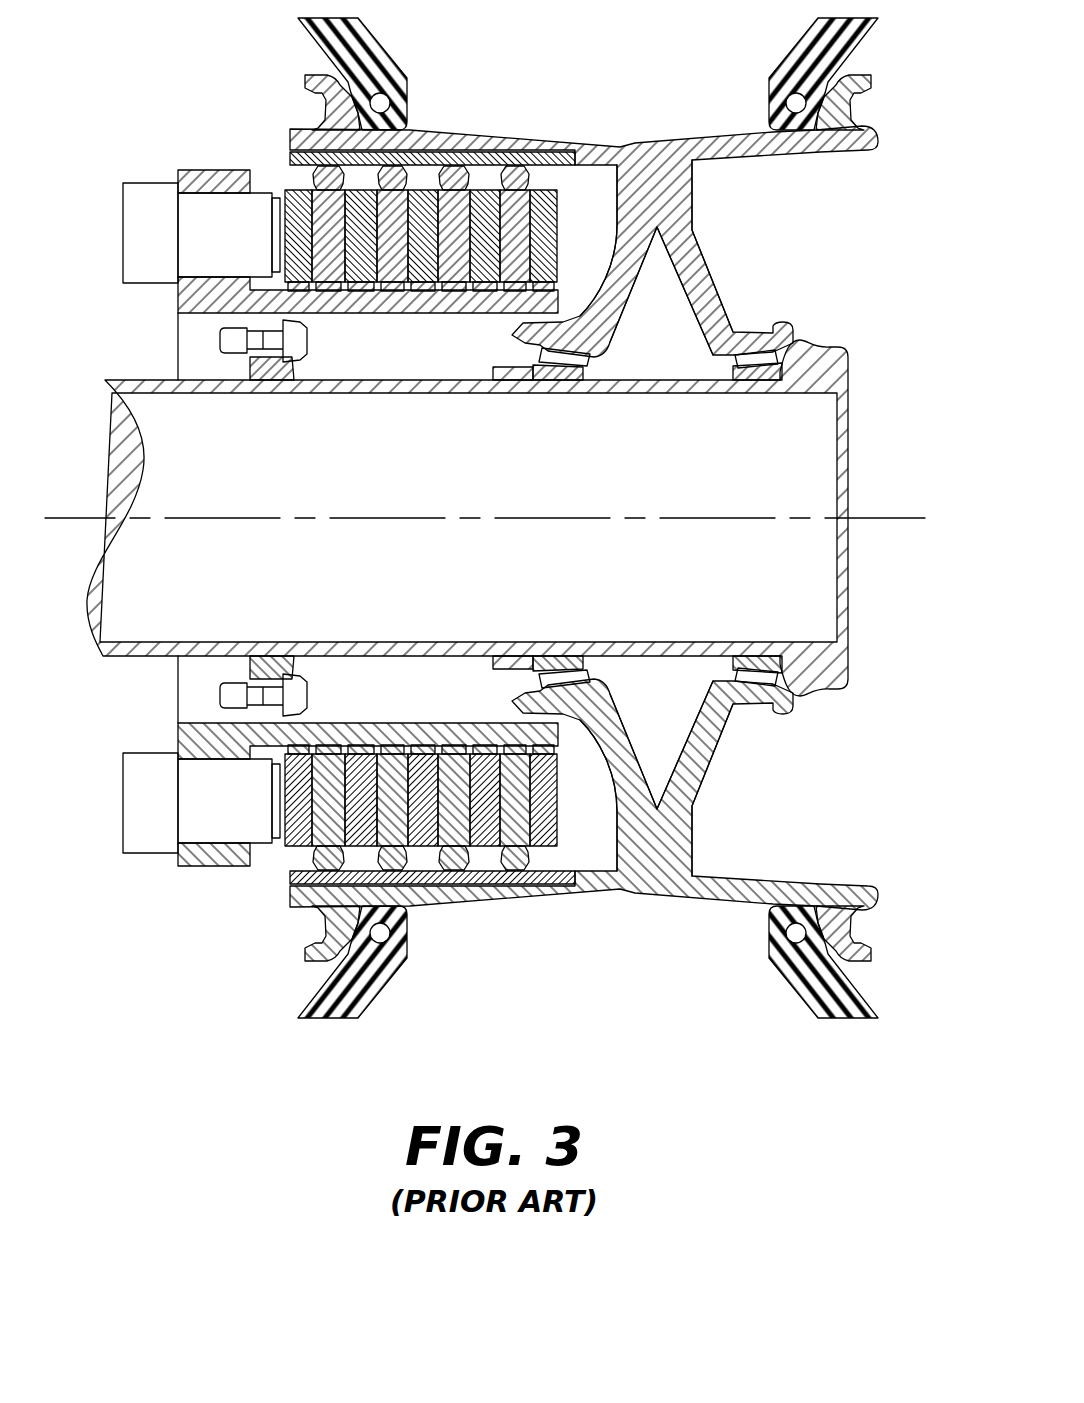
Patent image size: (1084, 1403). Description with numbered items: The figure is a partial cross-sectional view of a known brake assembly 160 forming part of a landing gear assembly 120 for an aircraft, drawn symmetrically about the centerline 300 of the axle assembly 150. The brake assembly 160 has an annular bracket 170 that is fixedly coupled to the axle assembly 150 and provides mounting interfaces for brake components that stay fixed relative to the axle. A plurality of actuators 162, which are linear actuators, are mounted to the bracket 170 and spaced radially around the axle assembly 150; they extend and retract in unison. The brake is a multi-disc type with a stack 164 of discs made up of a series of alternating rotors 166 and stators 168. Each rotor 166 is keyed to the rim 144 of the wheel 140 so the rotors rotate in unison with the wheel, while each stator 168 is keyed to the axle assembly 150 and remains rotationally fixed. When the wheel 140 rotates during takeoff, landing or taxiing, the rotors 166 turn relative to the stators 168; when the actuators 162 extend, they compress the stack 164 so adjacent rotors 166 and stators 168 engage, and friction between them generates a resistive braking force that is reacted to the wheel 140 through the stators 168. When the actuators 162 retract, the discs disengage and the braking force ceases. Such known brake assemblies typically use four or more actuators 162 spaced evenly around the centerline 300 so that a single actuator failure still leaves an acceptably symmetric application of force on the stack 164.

The landing gear assembly 120 is at (609, 518).
The wheel 140 is at (537, 366).
The rim 144 is at (717, 277).
The axle assembly 150 is at (127, 656).
The brake assembly 160 is at (337, 533).
The actuators 162 is at (205, 217).
The stack 164 is at (270, 181).
The rotors 166 is at (515, 207).
The stators 168 is at (292, 195).
The bracket 170 is at (190, 300).
The centerline 300 is at (873, 517).